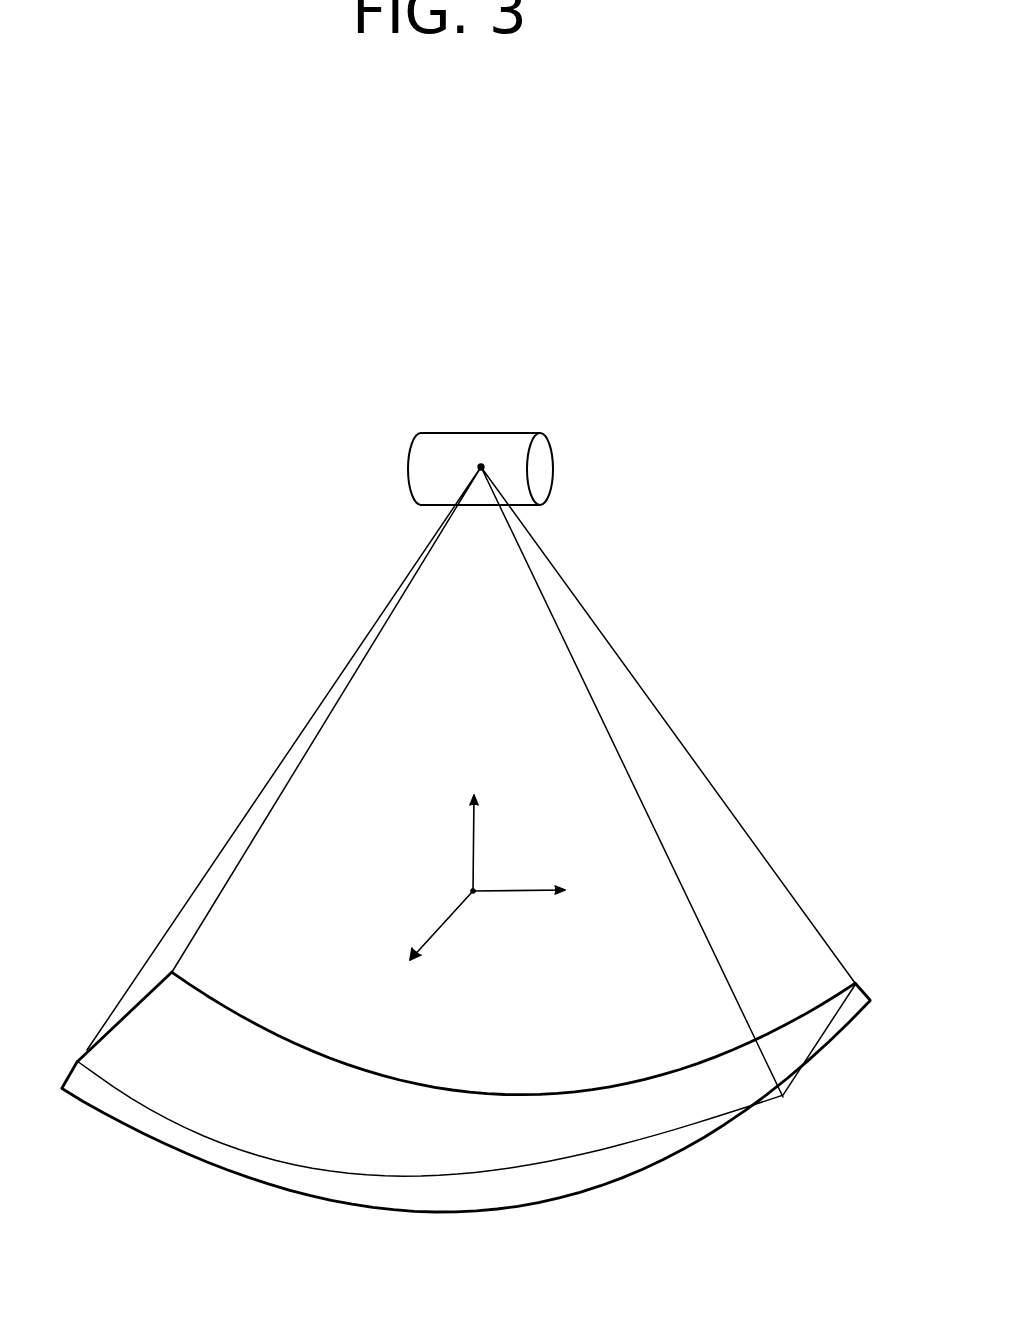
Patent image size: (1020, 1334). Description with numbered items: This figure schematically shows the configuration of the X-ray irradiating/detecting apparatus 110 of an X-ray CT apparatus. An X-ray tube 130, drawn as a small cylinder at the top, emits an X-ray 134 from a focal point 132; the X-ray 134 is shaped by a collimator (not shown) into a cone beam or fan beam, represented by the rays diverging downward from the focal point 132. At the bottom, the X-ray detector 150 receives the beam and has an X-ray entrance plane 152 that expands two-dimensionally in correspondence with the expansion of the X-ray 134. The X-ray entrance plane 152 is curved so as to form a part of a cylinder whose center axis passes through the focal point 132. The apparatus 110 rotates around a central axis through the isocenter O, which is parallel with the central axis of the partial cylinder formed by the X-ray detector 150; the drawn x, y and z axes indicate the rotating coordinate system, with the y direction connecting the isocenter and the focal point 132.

The X-ray irradiating/detecting apparatus 110 is at (612, 200).
The X-ray tube 130 is at (523, 433).
The focal point 132 is at (481, 467).
The X-ray 134 is at (638, 688).
The X-ray detector 150 is at (830, 1030).
The X-ray entrance plane 152 is at (685, 1100).